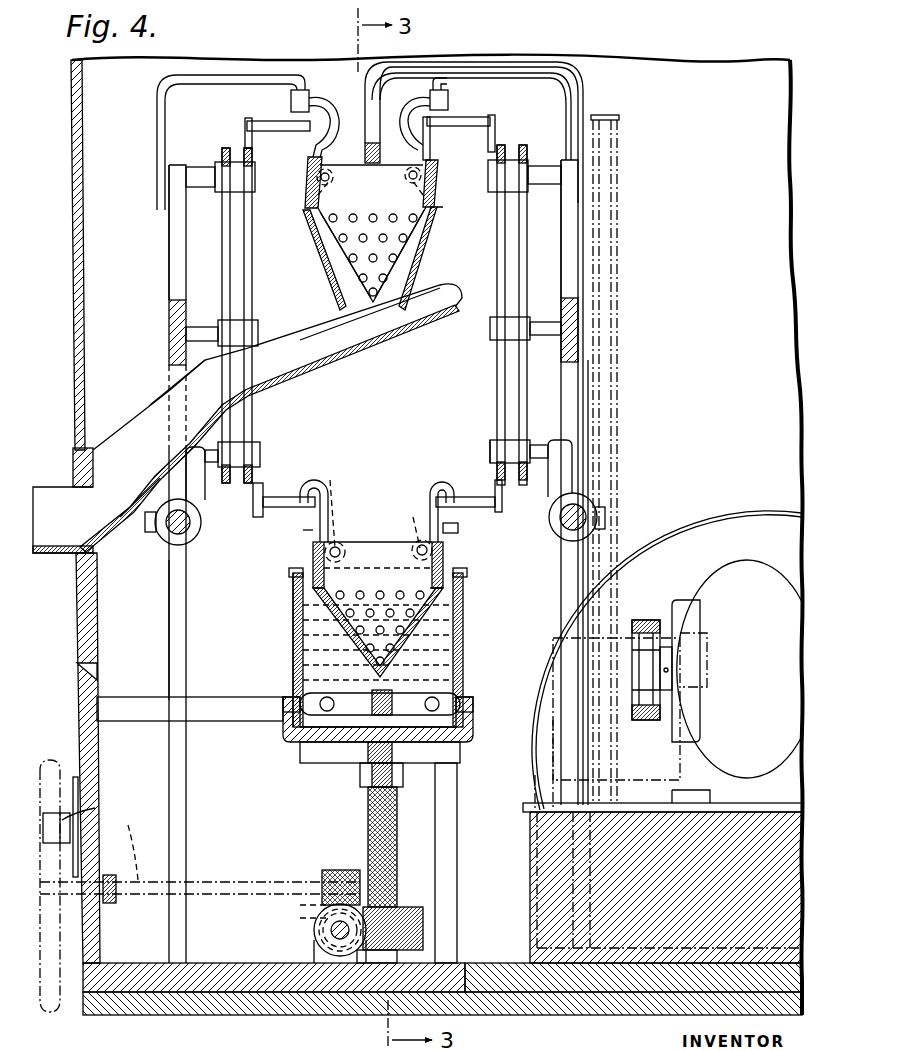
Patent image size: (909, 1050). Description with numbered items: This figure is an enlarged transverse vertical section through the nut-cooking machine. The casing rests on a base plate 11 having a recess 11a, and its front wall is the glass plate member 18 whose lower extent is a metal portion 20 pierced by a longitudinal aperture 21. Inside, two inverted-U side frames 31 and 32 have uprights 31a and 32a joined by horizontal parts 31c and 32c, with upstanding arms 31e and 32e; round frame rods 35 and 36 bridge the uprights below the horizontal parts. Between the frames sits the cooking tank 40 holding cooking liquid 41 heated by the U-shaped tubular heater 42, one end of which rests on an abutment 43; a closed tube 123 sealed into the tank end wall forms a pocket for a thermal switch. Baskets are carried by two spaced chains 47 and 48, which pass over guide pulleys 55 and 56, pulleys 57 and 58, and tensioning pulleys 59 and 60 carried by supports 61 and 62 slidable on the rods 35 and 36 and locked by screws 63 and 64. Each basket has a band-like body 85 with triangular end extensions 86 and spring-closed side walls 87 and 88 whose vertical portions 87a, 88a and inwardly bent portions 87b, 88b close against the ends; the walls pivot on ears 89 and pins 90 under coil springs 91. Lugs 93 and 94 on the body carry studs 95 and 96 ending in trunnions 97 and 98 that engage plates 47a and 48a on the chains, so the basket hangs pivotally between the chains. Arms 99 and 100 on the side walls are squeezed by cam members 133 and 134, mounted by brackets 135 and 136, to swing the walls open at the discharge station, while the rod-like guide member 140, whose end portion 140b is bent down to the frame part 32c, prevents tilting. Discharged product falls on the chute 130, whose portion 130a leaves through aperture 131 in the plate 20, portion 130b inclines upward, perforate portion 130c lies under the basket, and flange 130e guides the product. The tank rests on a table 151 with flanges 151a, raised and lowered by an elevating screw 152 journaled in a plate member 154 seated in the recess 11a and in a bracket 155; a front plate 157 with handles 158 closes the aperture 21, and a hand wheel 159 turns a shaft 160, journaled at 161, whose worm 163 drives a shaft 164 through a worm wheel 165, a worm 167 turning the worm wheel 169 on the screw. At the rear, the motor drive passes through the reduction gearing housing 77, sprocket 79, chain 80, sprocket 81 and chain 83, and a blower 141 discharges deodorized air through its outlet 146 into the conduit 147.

The base plate 11 is at (322, 1000).
The recess 11a is at (275, 1000).
The plate member 18 is at (85, 222).
The front plate 20 is at (78, 620).
The aperture 21 is at (99, 680).
The side frame 31 is at (165, 278).
The upright 31a is at (169, 618).
The horizontal part 31c is at (168, 322).
The upstanding arm 31e is at (168, 246).
The side frame member 32 is at (558, 275).
The upright 32a is at (589, 588).
The horizontal part 32c is at (585, 355).
The upstanding frame extension 32e is at (558, 240).
The frame member 35 is at (198, 538).
The frame member 36 is at (595, 505).
The cooking tank 40 is at (290, 662).
The cooking liquid 41 is at (465, 620).
The heater device 42 is at (447, 690).
The abutment 43 is at (368, 758).
The chain 47 is at (220, 235).
The plate 47a is at (265, 487).
The chain 48 is at (522, 148).
The plate 48a is at (497, 475).
The guide and supporting pulley 55 is at (240, 190).
The guide and supporting pulley 56 is at (503, 200).
The pulley 57 is at (258, 333).
The pulley 58 is at (492, 333).
The guide pulley 59 is at (262, 450).
The pulley 60 is at (518, 442).
The support 61 is at (180, 545).
The support 62 is at (592, 535).
The lock screw 63 is at (152, 532).
The set screw 64 is at (606, 513).
The reduction gearing housing 77 is at (735, 570).
The sprocket 79 is at (673, 672).
The chain 80 is at (661, 630).
The sprocket 81 is at (615, 725).
The chain 83 is at (619, 418).
The band-like body portion 85 is at (388, 162).
The end wall extension 86 is at (395, 245).
The side wall 87 is at (350, 635).
The upper vertical portion 87a is at (308, 216).
The inwardly directed portion 87b is at (330, 288).
The side wall 88 is at (310, 248).
The upper vertical portion 88a is at (435, 200).
The inwardly directed portion 88b is at (445, 278).
The ears 89 is at (327, 167).
The pins 90 is at (411, 170).
The coil springs 91 is at (375, 364).
The lug 93 is at (303, 530).
The lug 94 is at (458, 529).
The stud 95 is at (283, 133).
The stud 96 is at (460, 128).
The trunnion 97 is at (245, 126).
The trunnion 98 is at (497, 126).
The arm 99 is at (325, 104).
The arm 100 is at (412, 128).
The tube 123 is at (384, 694).
The discharge chute 130 is at (150, 452).
The chute portion 130a is at (55, 546).
The chute portion 130b is at (135, 500).
The chute portion 130c is at (300, 372).
The flange 130e is at (160, 398).
The aperture 131 is at (70, 490).
The cam member 133 is at (290, 100).
The cam member 134 is at (449, 100).
The bracket 135 is at (156, 122).
The bracket 136 is at (583, 104).
The guide member 140 is at (380, 165).
The end portion 140b is at (565, 63).
The blower 141 is at (742, 512).
The outlet 146 is at (560, 770).
The outlet conduit 147 is at (705, 950).
The table 151 is at (318, 745).
The flange 151a is at (290, 727).
The elevating screw 152 is at (367, 826).
The plate member 154 is at (318, 968).
The end bracket 155 is at (210, 697).
The vertical plate 157 is at (90, 805).
The handles 158 is at (95, 812).
The hand wheel 159 is at (50, 760).
The horizontal shaft 160 is at (130, 825).
The journal 161 is at (110, 903).
The worm 163 is at (320, 865).
The shaft 164 is at (300, 920).
The worm wheel 165 is at (300, 905).
The worm 167 is at (300, 970).
The worm wheel 169 is at (425, 912).